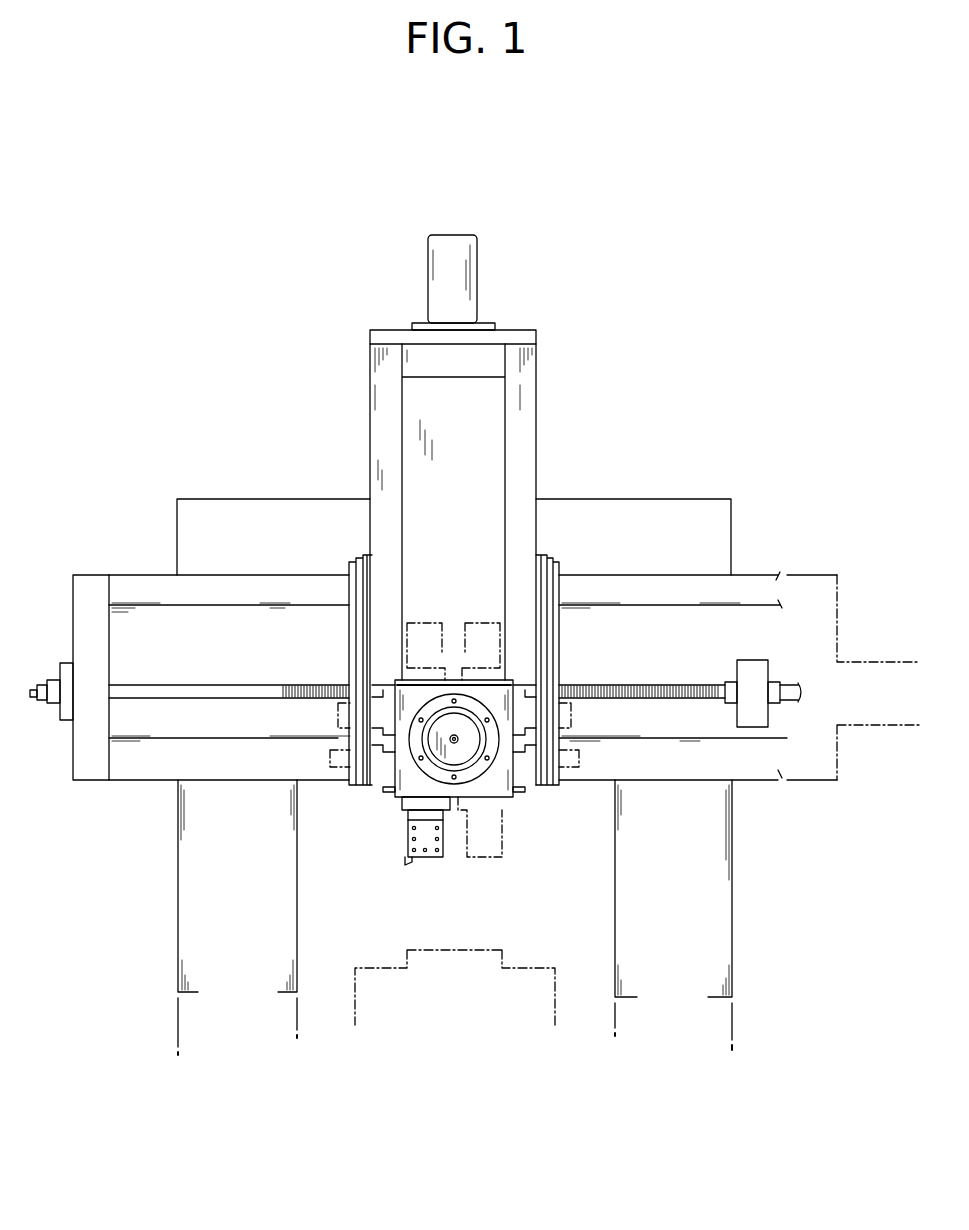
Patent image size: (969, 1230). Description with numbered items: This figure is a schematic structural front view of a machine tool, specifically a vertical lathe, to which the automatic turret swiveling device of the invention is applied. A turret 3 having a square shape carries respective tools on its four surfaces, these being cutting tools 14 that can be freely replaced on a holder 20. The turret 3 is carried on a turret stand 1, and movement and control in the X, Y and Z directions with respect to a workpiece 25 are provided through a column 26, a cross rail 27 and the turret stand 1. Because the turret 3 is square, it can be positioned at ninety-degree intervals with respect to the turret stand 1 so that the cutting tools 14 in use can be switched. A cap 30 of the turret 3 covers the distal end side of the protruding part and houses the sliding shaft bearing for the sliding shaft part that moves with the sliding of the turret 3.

The turret stand 1 is at (535, 445).
The turret 3 is at (503, 699).
The cutting tool 14 is at (407, 860).
The holder 20 is at (472, 623).
The workpiece 25 is at (495, 950).
The column 26 is at (727, 862).
The cross rail 27 is at (767, 573).
The cap 30 is at (465, 753).